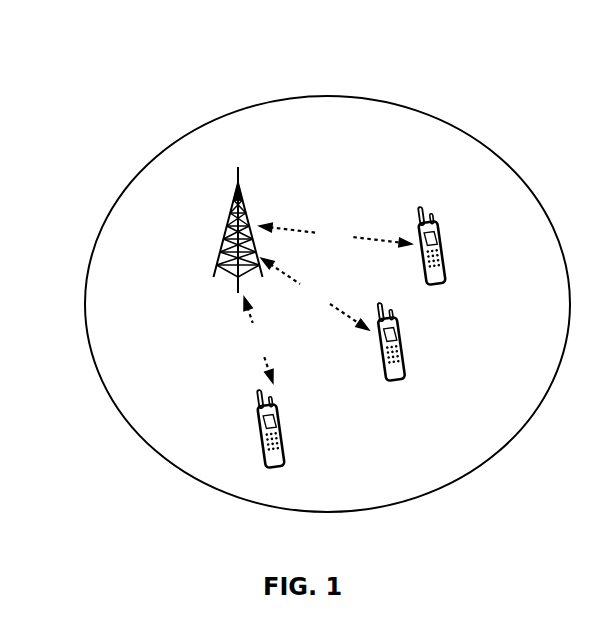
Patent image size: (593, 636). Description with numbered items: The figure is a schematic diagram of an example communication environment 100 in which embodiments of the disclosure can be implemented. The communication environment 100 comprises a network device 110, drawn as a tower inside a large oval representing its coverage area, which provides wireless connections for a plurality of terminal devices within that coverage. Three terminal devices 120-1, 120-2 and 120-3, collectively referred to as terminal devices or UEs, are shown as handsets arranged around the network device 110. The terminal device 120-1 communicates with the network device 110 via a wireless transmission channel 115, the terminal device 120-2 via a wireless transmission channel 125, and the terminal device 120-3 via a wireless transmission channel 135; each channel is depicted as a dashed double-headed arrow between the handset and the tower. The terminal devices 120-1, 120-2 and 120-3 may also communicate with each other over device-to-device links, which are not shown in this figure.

The communication environment 100 is at (130, 60).
The network device 110 is at (244, 193).
The wireless transmission channel 115 is at (335, 235).
The terminal device 120-1 is at (442, 236).
The terminal device 120-2 is at (403, 342).
The terminal device 120-3 is at (283, 441).
The wireless transmission channel 125 is at (315, 294).
The wireless transmission channel 135 is at (258, 340).